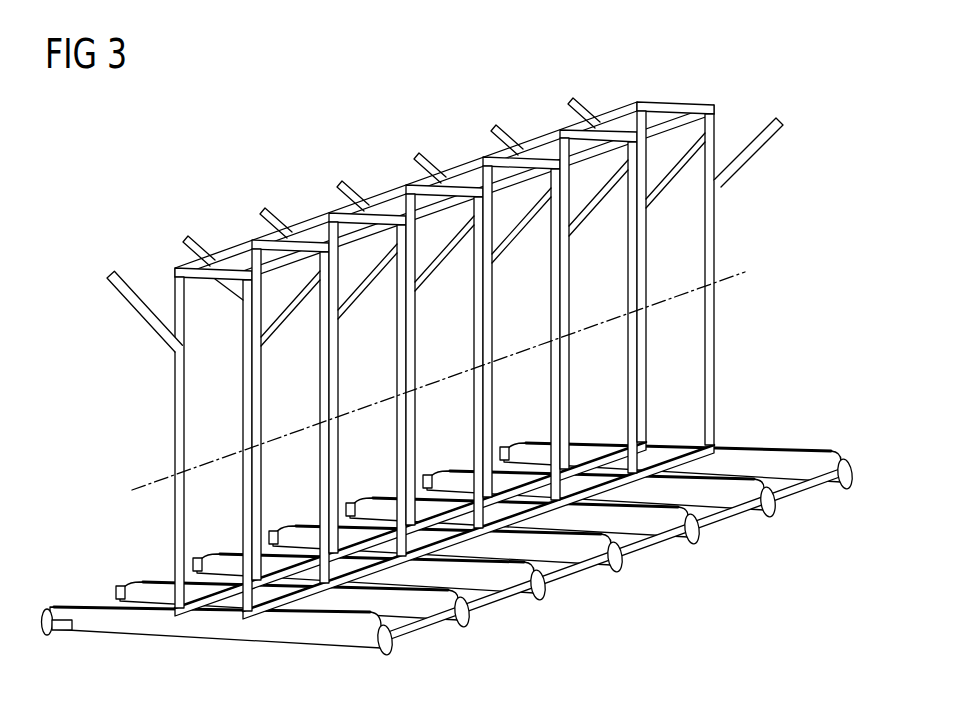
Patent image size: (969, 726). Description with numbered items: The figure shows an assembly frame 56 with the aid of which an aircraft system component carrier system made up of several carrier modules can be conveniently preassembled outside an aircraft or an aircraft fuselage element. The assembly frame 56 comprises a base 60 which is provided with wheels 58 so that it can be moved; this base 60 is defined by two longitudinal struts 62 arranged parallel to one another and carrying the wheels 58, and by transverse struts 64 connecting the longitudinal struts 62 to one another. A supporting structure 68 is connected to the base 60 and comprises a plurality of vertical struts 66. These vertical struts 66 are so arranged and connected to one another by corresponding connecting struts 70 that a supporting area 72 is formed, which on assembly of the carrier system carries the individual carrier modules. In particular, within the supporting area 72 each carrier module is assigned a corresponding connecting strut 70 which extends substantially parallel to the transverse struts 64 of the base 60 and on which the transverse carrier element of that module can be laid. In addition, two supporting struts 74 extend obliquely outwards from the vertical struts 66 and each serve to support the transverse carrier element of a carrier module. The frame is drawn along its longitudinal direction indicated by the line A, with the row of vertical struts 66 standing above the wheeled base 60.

The assembly frame 56 is at (480, 325).
The wheels 58 is at (520, 609).
The base 60 is at (448, 526).
The longitudinal struts 62 is at (112, 597).
The transverse struts 64 is at (348, 597).
The vertical struts 66 is at (706, 216).
The supporting structure 68 is at (745, 173).
The connecting struts 70 is at (289, 233).
The supporting area 72 is at (683, 98).
The supporting struts 74 is at (282, 316).
The longitudinal axis A is at (740, 284).